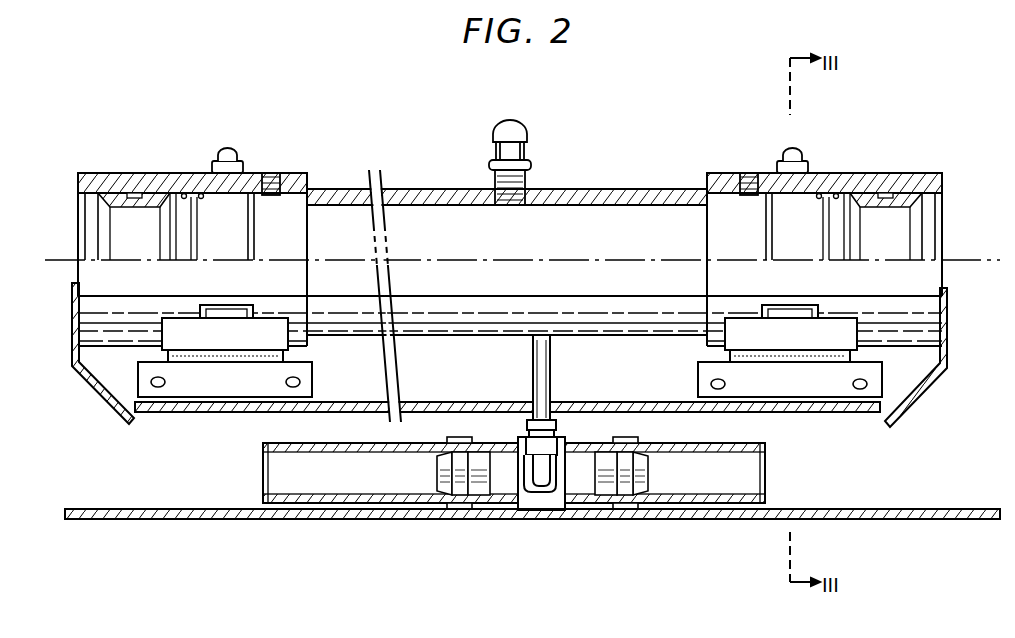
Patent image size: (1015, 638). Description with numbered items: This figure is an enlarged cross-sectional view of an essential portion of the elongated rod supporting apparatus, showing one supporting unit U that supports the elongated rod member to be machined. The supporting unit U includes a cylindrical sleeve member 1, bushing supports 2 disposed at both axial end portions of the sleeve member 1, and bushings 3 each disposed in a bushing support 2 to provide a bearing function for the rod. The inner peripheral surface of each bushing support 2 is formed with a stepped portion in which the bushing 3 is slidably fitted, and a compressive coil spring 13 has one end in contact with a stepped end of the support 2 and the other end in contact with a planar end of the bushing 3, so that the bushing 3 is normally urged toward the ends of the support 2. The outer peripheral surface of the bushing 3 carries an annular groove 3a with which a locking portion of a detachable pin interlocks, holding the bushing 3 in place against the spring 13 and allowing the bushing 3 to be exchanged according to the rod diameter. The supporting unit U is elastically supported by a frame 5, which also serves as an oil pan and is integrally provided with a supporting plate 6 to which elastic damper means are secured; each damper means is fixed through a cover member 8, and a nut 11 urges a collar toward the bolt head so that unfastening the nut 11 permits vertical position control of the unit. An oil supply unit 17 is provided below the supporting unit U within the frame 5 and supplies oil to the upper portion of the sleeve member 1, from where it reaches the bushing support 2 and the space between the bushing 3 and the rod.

The supporting unit U is at (568, 170).
The cylindrical sleeve member 1 is at (412, 190).
The bushing support 2 is at (160, 184).
The bushing 3 is at (113, 196).
The annular groove 3a is at (134, 191).
The compressive coil spring 13 is at (184, 196).
The nut 11 is at (242, 168).
The cover member 8 is at (273, 340).
The supporting plate 6 is at (768, 413).
The oil supply unit 17 is at (500, 506).
The frame 5 is at (596, 520).